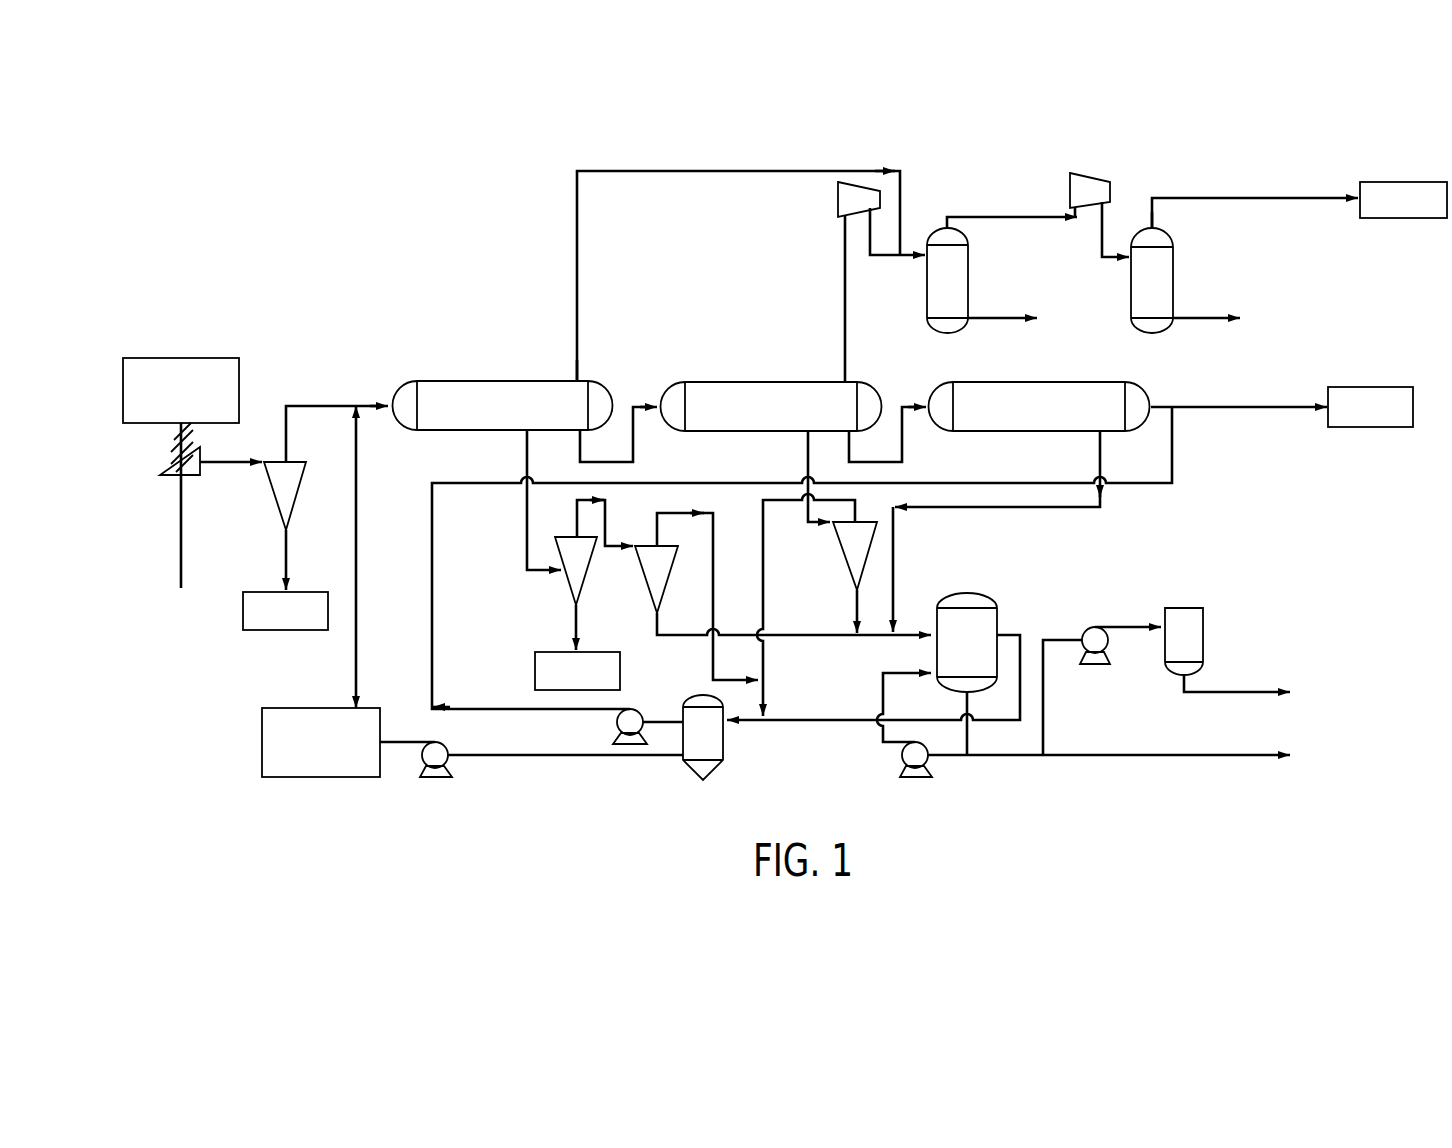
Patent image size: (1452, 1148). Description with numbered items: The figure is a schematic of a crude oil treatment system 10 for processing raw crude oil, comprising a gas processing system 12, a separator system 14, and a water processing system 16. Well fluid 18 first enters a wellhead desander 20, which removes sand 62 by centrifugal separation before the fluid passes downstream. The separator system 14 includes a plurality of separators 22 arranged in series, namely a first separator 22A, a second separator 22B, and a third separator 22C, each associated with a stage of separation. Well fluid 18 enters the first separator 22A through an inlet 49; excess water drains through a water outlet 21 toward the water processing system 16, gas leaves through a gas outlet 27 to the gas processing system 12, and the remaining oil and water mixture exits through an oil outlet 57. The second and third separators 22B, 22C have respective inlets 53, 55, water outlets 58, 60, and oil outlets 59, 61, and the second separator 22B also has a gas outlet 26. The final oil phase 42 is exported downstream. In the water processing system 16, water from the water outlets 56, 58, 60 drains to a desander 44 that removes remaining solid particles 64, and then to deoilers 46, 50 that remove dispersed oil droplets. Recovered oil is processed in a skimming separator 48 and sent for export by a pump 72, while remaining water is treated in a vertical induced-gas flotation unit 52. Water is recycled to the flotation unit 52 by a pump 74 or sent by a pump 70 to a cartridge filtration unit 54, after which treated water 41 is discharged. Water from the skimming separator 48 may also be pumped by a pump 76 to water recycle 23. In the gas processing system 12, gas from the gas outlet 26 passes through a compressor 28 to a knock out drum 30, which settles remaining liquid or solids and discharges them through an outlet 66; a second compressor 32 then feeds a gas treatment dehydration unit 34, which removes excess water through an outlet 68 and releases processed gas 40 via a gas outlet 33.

The crude oil treatment system 10 is at (305, 212).
The gas processing system 12 is at (570, 233).
The separator system 14 is at (392, 376).
The water processing system 16 is at (340, 682).
The well fluid 18 is at (180, 356).
The wellhead desander 20 is at (277, 460).
The water outlet 21 is at (352, 410).
The separators 22 is at (386, 386).
The first separator 22A is at (472, 381).
The second separator 22B is at (730, 382).
The third separator 22C is at (1052, 381).
The water recycle 23 is at (262, 742).
The gas outlet 26 is at (840, 382).
The gas outlet 27 is at (577, 381).
The compressor 28 is at (856, 183).
The knock out drum 30 is at (927, 292).
The compressor 32 is at (1088, 174).
The gas outlet 33 is at (1160, 228).
The gas treatment dehydration unit 34 is at (1145, 228).
The processed gas 40 is at (1412, 182).
The treated water 41 is at (1169, 724).
The final oil phase 42 is at (1370, 387).
The desander 44 is at (568, 537).
The deoiler 46 is at (645, 546).
The skimming separator 48 is at (683, 738).
The inlet 49 is at (400, 414).
The deoiler 50 is at (864, 550).
The vertical induced-gas flotation unit 52 is at (1000, 618).
The inlet 53 is at (660, 412).
The cartridge filtration unit 54 is at (1204, 630).
The inlet 55 is at (930, 412).
The water outlet 56 is at (520, 433).
The oil outlet 57 is at (578, 433).
The water outlet 58 is at (800, 433).
The oil outlet 59 is at (848, 434).
The water outlet 60 is at (1096, 433).
The oil outlet 61 is at (1152, 405).
The sand 62 is at (243, 608).
The sand or other solid particles 64 is at (560, 650).
The outlet 66 is at (975, 333).
The outlet 68 is at (1180, 333).
The pump 70 is at (1098, 667).
The pump 72 is at (617, 720).
The pump 74 is at (915, 778).
The pump 76 is at (447, 777).